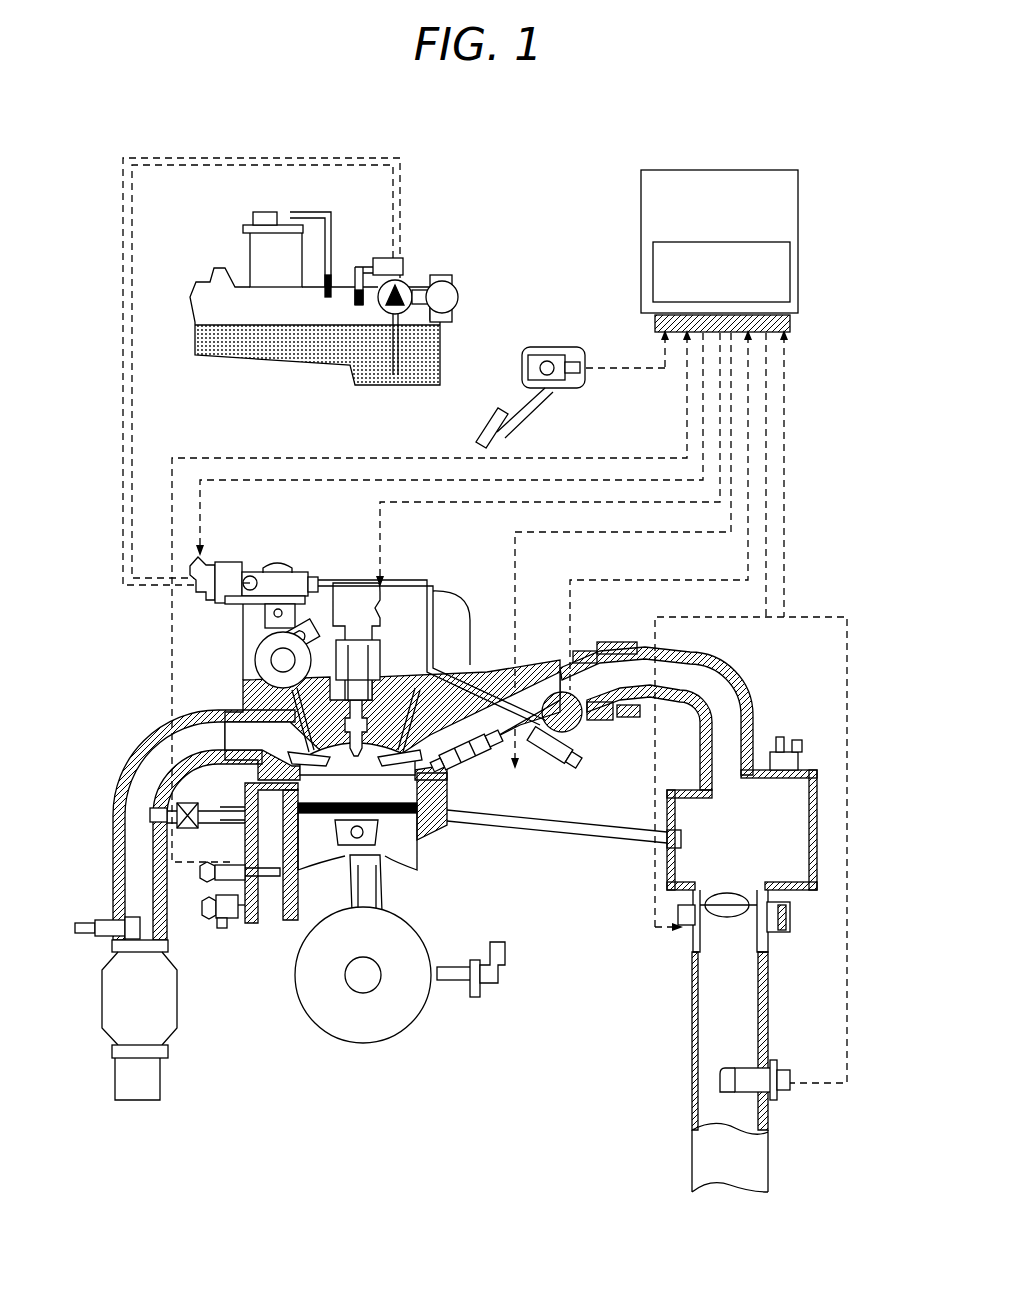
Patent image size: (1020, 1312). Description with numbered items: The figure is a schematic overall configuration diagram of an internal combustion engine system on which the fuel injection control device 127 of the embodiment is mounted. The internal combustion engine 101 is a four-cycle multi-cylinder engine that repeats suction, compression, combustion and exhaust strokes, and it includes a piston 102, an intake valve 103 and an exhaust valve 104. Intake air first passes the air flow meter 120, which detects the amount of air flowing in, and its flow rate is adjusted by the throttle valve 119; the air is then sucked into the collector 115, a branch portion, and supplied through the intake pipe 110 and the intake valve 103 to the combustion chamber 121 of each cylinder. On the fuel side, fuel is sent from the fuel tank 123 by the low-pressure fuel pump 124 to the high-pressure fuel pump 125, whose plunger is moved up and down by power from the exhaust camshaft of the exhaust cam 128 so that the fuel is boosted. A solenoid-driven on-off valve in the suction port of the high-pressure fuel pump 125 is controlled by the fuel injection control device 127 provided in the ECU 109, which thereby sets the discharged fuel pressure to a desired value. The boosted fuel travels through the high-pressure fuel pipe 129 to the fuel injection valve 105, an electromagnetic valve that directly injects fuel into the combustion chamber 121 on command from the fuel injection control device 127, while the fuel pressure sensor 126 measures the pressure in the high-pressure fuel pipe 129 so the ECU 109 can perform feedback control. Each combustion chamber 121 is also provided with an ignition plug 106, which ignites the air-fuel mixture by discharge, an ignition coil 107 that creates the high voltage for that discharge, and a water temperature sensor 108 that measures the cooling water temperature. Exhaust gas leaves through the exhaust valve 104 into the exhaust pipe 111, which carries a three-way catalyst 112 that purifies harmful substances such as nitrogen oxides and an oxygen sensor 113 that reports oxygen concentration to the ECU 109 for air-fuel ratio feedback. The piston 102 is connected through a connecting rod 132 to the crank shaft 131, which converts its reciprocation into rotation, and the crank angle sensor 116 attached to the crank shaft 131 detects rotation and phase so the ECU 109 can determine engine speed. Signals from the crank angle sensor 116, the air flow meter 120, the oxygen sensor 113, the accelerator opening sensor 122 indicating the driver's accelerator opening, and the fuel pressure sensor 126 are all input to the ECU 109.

The internal combustion engine 101 is at (443, 808).
The piston 102 is at (405, 852).
The intake valve 103 is at (404, 765).
The exhaust valve 104 is at (310, 766).
The fuel injection valve 105 is at (466, 762).
The ignition plug 106 is at (358, 757).
The ignition coil 107 is at (356, 598).
The water temperature sensor 108 is at (268, 885).
The engine control unit (ECU) 109 is at (676, 196).
The intake pipe 110 is at (560, 675).
The exhaust pipe 111 is at (150, 748).
The three-way catalyst 112 is at (178, 1012).
The oxygen sensor 113 is at (92, 920).
The collector 115 is at (742, 813).
The crank angle sensor 116 is at (497, 977).
The throttle valve 119 is at (781, 940).
The air flow meter 120 is at (791, 1092).
The combustion chamber 121 is at (418, 825).
The accelerator opening sensor 122 is at (549, 347).
The fuel tank 123 is at (328, 355).
The low-pressure fuel pump 124 is at (421, 276).
The high-pressure fuel pump 125 is at (282, 566).
The fuel pressure sensor 126 is at (584, 762).
The fuel injection control device 127 is at (790, 276).
The exhaust cam 128 is at (258, 655).
The high-pressure fuel pipe 129 is at (400, 578).
The crank shaft 131 is at (378, 1025).
The connecting rod 132 is at (355, 868).